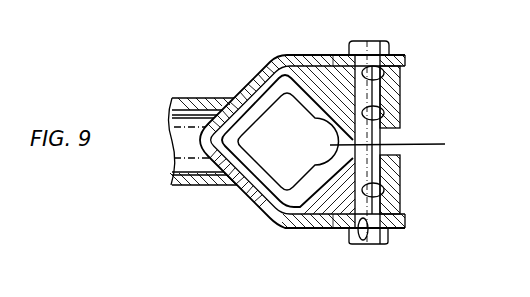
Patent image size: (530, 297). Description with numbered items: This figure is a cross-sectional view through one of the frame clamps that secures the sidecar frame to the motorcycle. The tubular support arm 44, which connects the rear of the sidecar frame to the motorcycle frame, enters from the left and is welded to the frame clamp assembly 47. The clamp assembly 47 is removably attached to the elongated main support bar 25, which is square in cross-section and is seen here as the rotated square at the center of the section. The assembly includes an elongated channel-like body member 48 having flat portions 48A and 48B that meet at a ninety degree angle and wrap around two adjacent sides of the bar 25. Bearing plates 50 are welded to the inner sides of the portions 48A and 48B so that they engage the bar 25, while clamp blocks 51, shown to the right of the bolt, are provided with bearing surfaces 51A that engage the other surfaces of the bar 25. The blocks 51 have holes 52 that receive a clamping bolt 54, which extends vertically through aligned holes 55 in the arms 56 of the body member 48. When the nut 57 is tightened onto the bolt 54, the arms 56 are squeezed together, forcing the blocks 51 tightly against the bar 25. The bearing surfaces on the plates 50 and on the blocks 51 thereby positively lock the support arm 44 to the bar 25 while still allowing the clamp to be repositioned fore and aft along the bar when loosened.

The tubular support arm 44 is at (188, 97).
The frame clamp assembly 47 is at (266, 50).
The channel-like body member 48 is at (323, 53).
The flat portion 48A is at (248, 83).
The flat portion 48B is at (256, 208).
The main support bar 25 is at (283, 205).
The bearing plates 50 is at (255, 115).
The clamp blocks 51 is at (400, 91).
The bearing surfaces 51A is at (404, 144).
The holes 52 is at (387, 113).
The clamping bolts 54 is at (381, 41).
The holes 55 is at (385, 72).
The arms 56 is at (334, 53).
The nuts 57 is at (386, 242).